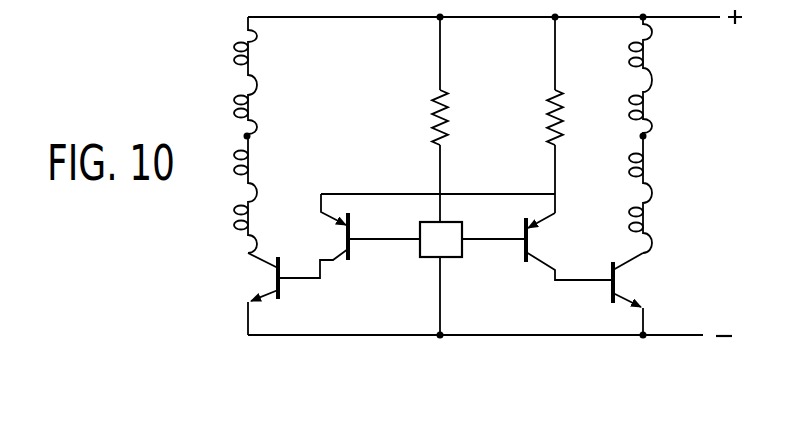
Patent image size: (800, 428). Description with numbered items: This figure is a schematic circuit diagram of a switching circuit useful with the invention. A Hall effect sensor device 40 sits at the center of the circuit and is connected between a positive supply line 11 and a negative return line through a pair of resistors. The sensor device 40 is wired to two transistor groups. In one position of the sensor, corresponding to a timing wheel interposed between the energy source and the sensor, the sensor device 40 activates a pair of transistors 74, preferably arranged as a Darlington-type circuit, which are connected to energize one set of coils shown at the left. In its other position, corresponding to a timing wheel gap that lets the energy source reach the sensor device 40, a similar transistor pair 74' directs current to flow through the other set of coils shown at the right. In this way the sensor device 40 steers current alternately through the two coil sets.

The power supply line 11 is at (459, 15).
The Hall effect sensor device 40 is at (447, 249).
The pair of transistors 74 is at (298, 264).
The similar transistor pair 74' is at (584, 274).